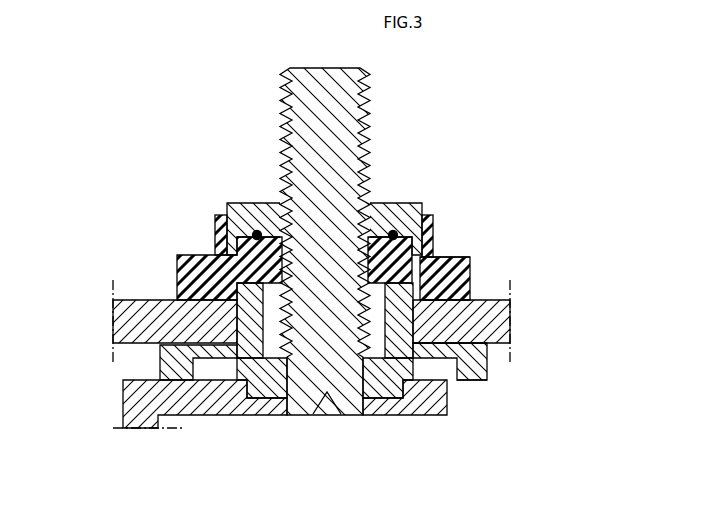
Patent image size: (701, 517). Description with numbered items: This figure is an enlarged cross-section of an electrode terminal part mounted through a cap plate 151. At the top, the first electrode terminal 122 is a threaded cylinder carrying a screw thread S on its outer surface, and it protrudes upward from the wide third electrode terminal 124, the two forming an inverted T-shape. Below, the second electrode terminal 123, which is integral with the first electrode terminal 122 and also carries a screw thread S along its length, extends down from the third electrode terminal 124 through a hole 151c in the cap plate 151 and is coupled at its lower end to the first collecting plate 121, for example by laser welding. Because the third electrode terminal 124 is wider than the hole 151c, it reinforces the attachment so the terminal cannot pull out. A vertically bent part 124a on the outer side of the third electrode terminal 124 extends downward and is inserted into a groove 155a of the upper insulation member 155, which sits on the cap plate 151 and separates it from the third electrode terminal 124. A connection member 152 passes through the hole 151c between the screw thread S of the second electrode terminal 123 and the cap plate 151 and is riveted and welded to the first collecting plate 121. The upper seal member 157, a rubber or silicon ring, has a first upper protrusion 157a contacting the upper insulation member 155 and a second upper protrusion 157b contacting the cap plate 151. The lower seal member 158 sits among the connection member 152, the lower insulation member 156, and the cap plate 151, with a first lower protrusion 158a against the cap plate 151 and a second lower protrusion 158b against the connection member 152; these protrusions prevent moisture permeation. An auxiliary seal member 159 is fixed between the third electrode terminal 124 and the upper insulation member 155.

The first collecting plate 121 is at (437, 394).
The first electrode terminal 122 is at (292, 113).
The second electrode terminal 123 is at (333, 365).
The third electrode terminal 124 is at (247, 210).
The vertically bent part 124a is at (215, 248).
The cap plate 151 is at (118, 317).
The hole 151c is at (221, 347).
The connection member 152 is at (267, 392).
The upper insulation member 155 is at (183, 280).
The groove 155a is at (430, 230).
The lower insulation member 156 is at (165, 366).
The upper seal member 157 is at (470, 288).
The first upper protrusion 157a is at (474, 259).
The second upper protrusion 157b is at (433, 302).
The lower seal member 158 is at (460, 356).
The first lower protrusion 158a is at (415, 337).
The second lower protrusion 158b is at (455, 377).
The auxiliary seal member 159 is at (395, 233).
The screw thread S is at (367, 127).